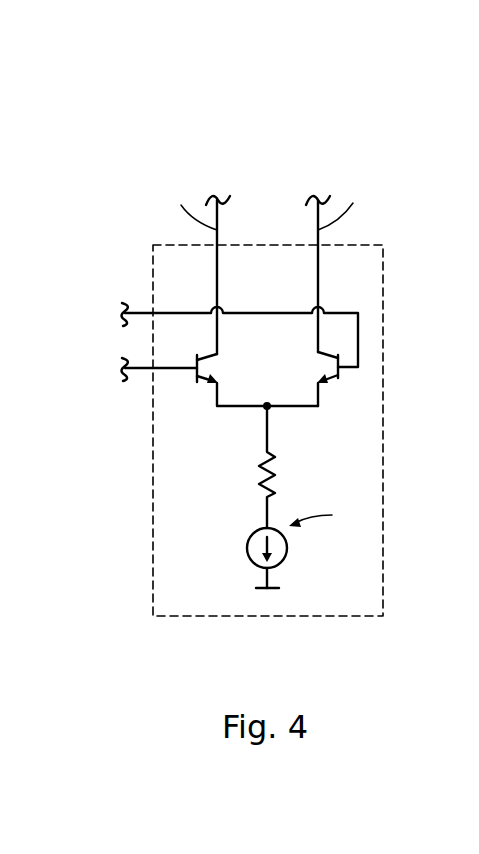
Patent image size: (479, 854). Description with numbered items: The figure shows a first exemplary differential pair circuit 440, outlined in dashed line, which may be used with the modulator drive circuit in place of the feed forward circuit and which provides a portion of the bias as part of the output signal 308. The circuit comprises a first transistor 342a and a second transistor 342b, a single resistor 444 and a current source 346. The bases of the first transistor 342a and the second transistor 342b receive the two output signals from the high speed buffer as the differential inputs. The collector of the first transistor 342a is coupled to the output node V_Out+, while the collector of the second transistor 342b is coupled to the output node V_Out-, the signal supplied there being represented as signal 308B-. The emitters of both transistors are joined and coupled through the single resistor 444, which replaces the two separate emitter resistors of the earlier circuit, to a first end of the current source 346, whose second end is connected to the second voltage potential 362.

The first exemplary differential pair circuit 440 is at (192, 148).
The output signal 308 is at (289, 230).
The signal 308B- is at (140, 372).
The first transistor 342a is at (212, 362).
The second transistor 342b is at (322, 361).
The single resistor 444 is at (262, 453).
The current source 346 is at (250, 530).
The second voltage potential 362 is at (274, 590).